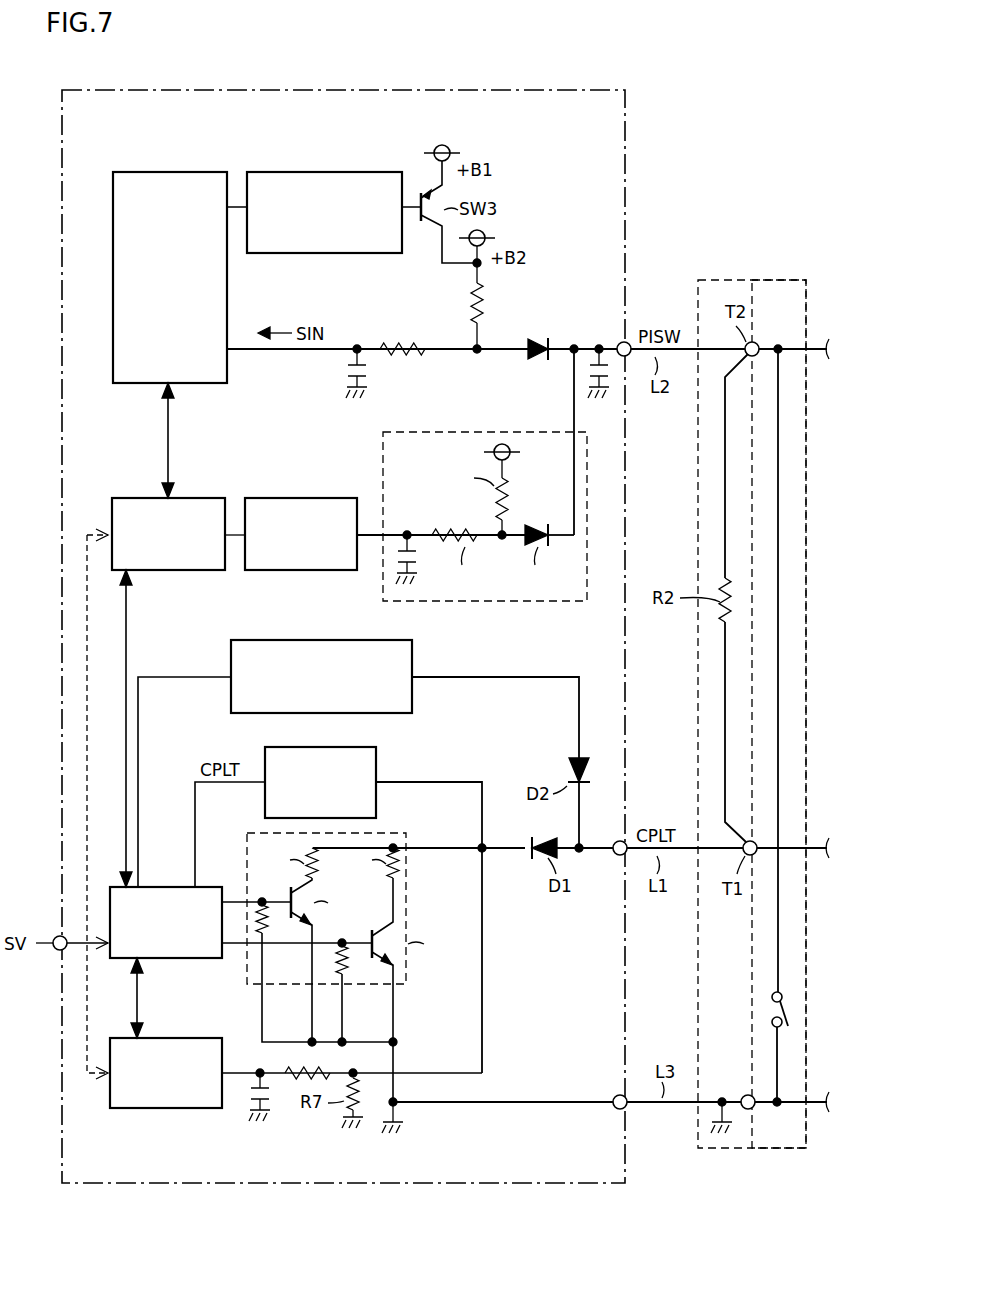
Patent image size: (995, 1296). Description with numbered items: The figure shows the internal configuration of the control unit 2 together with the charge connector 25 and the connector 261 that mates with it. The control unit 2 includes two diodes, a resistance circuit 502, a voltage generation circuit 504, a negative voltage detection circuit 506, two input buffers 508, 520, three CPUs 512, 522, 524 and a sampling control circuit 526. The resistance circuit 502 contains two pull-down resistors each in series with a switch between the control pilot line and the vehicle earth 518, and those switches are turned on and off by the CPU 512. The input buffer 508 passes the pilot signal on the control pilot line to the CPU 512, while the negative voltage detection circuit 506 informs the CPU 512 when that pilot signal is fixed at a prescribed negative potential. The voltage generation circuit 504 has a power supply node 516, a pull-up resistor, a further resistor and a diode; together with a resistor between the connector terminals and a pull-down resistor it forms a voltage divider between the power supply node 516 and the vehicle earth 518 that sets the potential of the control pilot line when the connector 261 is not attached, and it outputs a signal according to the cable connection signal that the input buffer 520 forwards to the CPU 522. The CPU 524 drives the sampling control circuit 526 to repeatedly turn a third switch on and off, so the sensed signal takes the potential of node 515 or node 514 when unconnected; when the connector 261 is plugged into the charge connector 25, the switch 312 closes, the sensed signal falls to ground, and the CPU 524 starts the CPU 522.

The control unit 2 is at (546, 90).
The CPU 524 is at (172, 172).
The sampling control circuit 526 is at (339, 172).
The node 514 is at (442, 145).
The node 515 is at (487, 236).
The power supply node 516 is at (502, 444).
The voltage generation circuit 504 is at (383, 456).
The CPU 522 is at (189, 502).
The input buffer 520 is at (297, 502).
The negative voltage detection circuit 506 is at (367, 642).
The input buffer 508 is at (314, 749).
The resistance circuit 502 is at (246, 840).
The CPU 512 is at (166, 887).
The vehicle earth 518 is at (350, 1134).
The charge connector 25 is at (723, 280).
The connector 261 is at (781, 280).
The switch 312 is at (770, 1010).